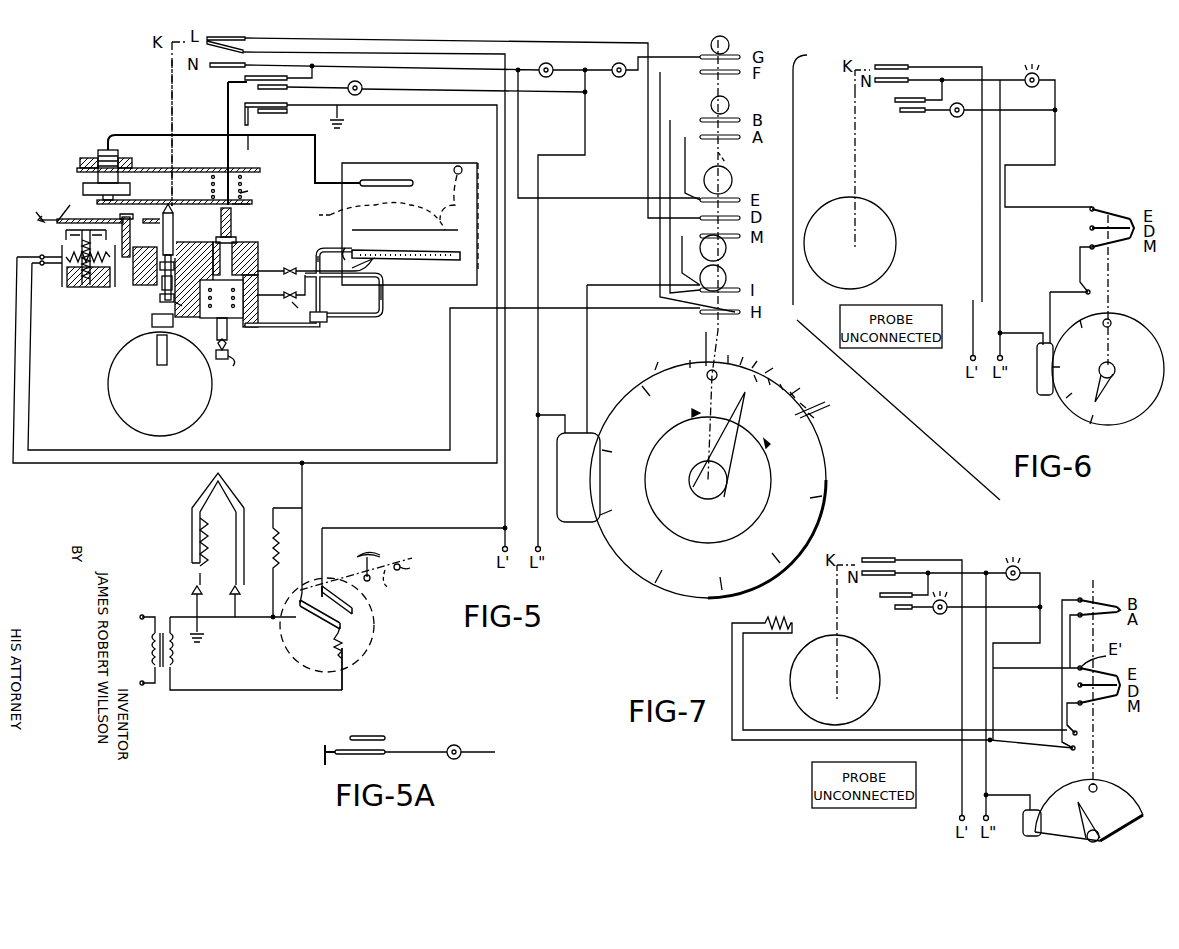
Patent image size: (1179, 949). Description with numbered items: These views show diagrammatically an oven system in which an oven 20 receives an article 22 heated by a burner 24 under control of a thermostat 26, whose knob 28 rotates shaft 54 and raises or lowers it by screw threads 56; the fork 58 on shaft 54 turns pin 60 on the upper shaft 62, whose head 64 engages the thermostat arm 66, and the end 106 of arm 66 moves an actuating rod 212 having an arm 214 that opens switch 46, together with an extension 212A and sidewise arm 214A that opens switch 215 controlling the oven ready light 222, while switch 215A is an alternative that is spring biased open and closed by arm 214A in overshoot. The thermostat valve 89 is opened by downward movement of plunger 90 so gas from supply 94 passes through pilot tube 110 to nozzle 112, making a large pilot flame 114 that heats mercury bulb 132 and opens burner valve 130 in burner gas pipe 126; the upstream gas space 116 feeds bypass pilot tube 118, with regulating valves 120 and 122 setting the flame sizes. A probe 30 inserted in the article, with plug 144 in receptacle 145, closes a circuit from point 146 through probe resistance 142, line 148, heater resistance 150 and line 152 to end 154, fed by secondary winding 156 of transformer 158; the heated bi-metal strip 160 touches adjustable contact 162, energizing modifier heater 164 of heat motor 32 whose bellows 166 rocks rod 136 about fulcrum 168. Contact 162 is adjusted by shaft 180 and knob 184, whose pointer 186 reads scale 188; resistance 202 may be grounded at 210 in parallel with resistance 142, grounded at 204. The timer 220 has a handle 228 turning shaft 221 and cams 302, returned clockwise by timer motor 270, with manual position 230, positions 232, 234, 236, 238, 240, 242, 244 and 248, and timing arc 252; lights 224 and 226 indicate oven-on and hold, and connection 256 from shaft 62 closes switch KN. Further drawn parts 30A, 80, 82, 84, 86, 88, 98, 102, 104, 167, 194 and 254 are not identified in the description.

In FIG. 5, the oven 20 is at (412, 172).
In FIG. 5, the article 22 is at (315, 215).
In FIG. 5, the heating means 24 is at (415, 230).
In FIG. 5, the thermostatic means 26 is at (84, 143).
In FIG. 5, the thermostatic knob 28 is at (208, 413).
In FIG. 6, the thermostatic knob 28 is at (895, 243).
In FIG. 7, the thermostatic knob 28 is at (880, 682).
In FIG. 5, the probe 30 is at (430, 212).
In FIG. 5, the meat probe element 30A is at (200, 505).
In FIG. 5, the modifier 32 is at (27, 209).
In FIG. 5, the switch 46 is at (275, 113).
In FIG. 5, the shaft 54 is at (152, 318).
In FIG. 5, the screw thread construction 56 is at (160, 298).
In FIG. 5, the fork 58 is at (162, 284).
In FIG. 5, the pin 60 is at (160, 268).
In FIG. 5, the upper shaft 62 is at (173, 240).
In FIG. 5, the thermostat arm engaging head 64 is at (178, 200).
In FIG. 5, the thermostat arm 66 is at (145, 172).
In FIG. 5, the bracket 80 is at (83, 180).
In FIG. 5, the contact arm 82 is at (370, 180).
In FIG. 5, the lead wire 84 is at (248, 150).
In FIG. 5, the solenoid 86 is at (117, 155).
In FIG. 5, the rivets 88 is at (245, 178).
In FIG. 5, the thermostat valve 89 is at (261, 253).
In FIG. 5, the valve plunger 90 is at (182, 306).
In FIG. 5, the supply 94 is at (234, 364).
In FIG. 5, the contact 98 is at (250, 204).
In FIG. 5, the actuating shaft 102 is at (231, 222).
In FIG. 5, the terminal block 104 is at (208, 308).
In FIG. 5, the end of thermostat lever 106 is at (256, 188).
In FIG. 5, the pilot tube 110 is at (284, 266).
In FIG. 5, the pilot nozzle 112 is at (372, 266).
In FIG. 5, the large pilot flame 114 is at (385, 252).
In FIG. 5, the upstream gas space 116 is at (226, 343).
In FIG. 5, the bypass pilot tube 118 is at (283, 313).
In FIG. 5, the regulating valve 120 is at (296, 267).
In FIG. 5, the regulating valve 122 is at (284, 288).
In FIG. 5, the burner gas pipe 126 is at (270, 338).
In FIG. 5, the burner valve 130 is at (327, 322).
In FIG. 5, the mercury bulb 132 is at (385, 290).
In FIG. 5, the rod 136 is at (95, 218).
In FIG. 5, the probe resistance 142 is at (195, 545).
In FIG. 5, the connector plug 144 is at (240, 585).
In FIG. 5, the connector receptacle 145 is at (240, 598).
In FIG. 5, the circuit starting point 146 is at (175, 617).
In FIG. 5, the line 148 is at (262, 623).
In FIG. 5, the heater resistance 150 is at (325, 645).
In FIG. 5, the line 152 is at (228, 690).
In FIG. 5, the end 154 is at (172, 690).
In FIG. 5, the secondary winding 156 is at (178, 660).
In FIG. 5, the transformer 158 is at (150, 645).
In FIG. 5, the bi-metal strip 160 is at (362, 658).
In FIG. 5, the adjustable contact 162 is at (355, 612).
In FIG. 5, the modifier heater 164 is at (68, 262).
In FIG. 7, the modifier heater 164 is at (775, 615).
In FIG. 5, the bellows 166 is at (66, 228).
In FIG. 5, the lever 167 is at (34, 222).
In FIG. 5, the fulcrum 168 is at (68, 200).
In FIG. 5, the rotatable shaft 180 is at (390, 588).
In FIG. 5, the knob 184 is at (417, 567).
In FIG. 5, the pointer 186 is at (362, 567).
In FIG. 5, the temperature scale 188 is at (375, 553).
In FIG. 5, the push rod 194 is at (130, 232).
In FIG. 5, the resistance 202 is at (270, 540).
In FIG. 5, the ground 204 is at (202, 645).
In FIG. 5, the ground 210 is at (342, 125).
In FIG. 5, the actuating member 212 is at (227, 122).
In FIG. 5, the extension 212A is at (227, 95).
In FIG. 5A, the extension 212A is at (323, 762).
In FIG. 5, the arm 214 is at (246, 107).
In FIG. 5, the sidewise arm 214A is at (240, 77).
In FIG. 5A, the sidewise arm 214A is at (331, 748).
In FIG. 5, the switch 215 is at (270, 90).
In FIG. 6, the switch 215 is at (912, 113).
In FIG. 7, the switch 215 is at (895, 610).
In FIG. 5A, the switch 215A is at (368, 745).
In FIG. 5, the timer 220 is at (826, 465).
In FIG. 6, the timer 220 is at (1133, 328).
In FIG. 7, the timer 220 is at (1120, 795).
In FIG. 5, the shaft 221 is at (735, 500).
In FIG. 5, the oven ready light 222 is at (360, 83).
In FIG. 5A, the oven ready light 222 is at (458, 745).
In FIG. 6, the oven ready light 222 is at (957, 117).
In FIG. 7, the oven ready light 222 is at (940, 614).
In FIG. 5, the oven on light 224 is at (551, 64).
In FIG. 6, the oven on light 224 is at (1040, 75).
In FIG. 7, the oven on light 224 is at (1020, 568).
In FIG. 5, the hold light 226 is at (617, 77).
In FIG. 5, the timer handle 228 is at (743, 420).
In FIG. 6, the timer handle 228 is at (1108, 385).
In FIG. 7, the timer handle 228 is at (1082, 824).
In FIG. 5, the manual position 230 is at (773, 368).
In FIG. 5, the timer position 232 is at (665, 362).
In FIG. 7, the timer position 232 is at (1077, 763).
In FIG. 5, the timer position 234 is at (690, 360).
In FIG. 5, the timer position 236 is at (690, 342).
In FIG. 5, the timer position 238 is at (728, 355).
In FIG. 5, the timer position 240 is at (743, 357).
In FIG. 5, the timer position 242 is at (757, 361).
In FIG. 5, the timer position 244 is at (812, 380).
In FIG. 5, the timer position 248 is at (820, 402).
In FIG. 5, the arc 252 is at (708, 478).
In FIG. 5, the diode 254 is at (188, 592).
In FIG. 5, the connection 256 is at (172, 105).
In FIG. 6, the connection 256 is at (855, 150).
In FIG. 7, the connection 256 is at (860, 615).
In FIG. 5, the timer motor 270 is at (578, 522).
In FIG. 6, the timer motor 270 is at (1043, 395).
In FIG. 7, the timer motor 270 is at (1028, 810).
In FIG. 5, the cams 302 is at (740, 270).